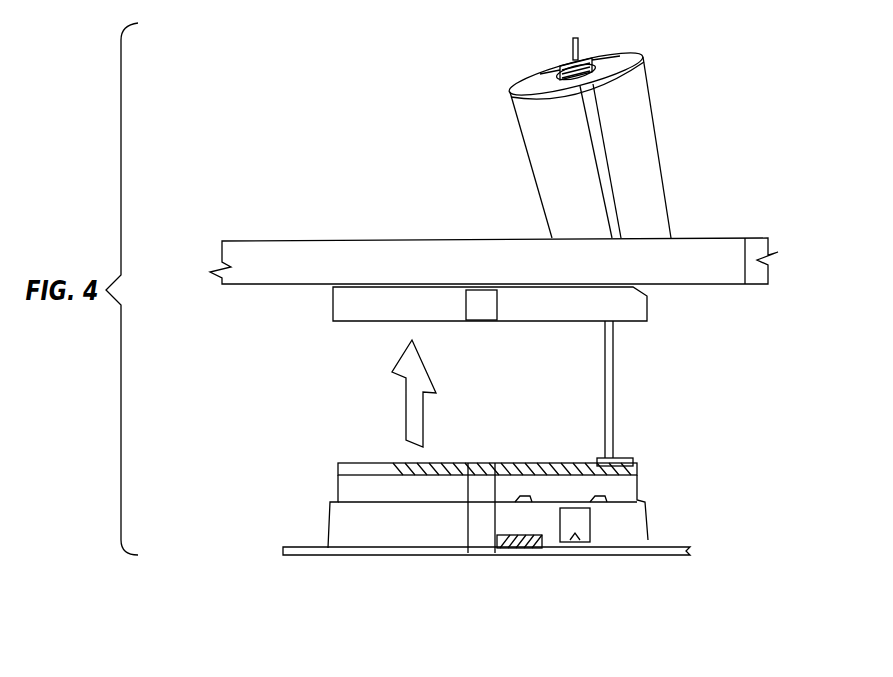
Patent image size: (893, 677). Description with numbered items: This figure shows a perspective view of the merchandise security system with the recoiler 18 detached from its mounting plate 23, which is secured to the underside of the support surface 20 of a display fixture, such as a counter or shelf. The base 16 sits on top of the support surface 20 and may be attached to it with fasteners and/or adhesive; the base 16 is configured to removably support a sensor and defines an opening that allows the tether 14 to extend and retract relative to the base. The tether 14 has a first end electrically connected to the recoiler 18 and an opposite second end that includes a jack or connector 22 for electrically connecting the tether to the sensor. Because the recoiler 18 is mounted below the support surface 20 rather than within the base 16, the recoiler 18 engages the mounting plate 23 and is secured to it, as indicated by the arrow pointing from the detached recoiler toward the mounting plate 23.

The tether 14 is at (615, 410).
The base 16 is at (640, 113).
The recoiler 18 is at (327, 500).
The support surface 20 is at (367, 240).
The connector 22 is at (568, 68).
The mounting plate 23 is at (342, 303).